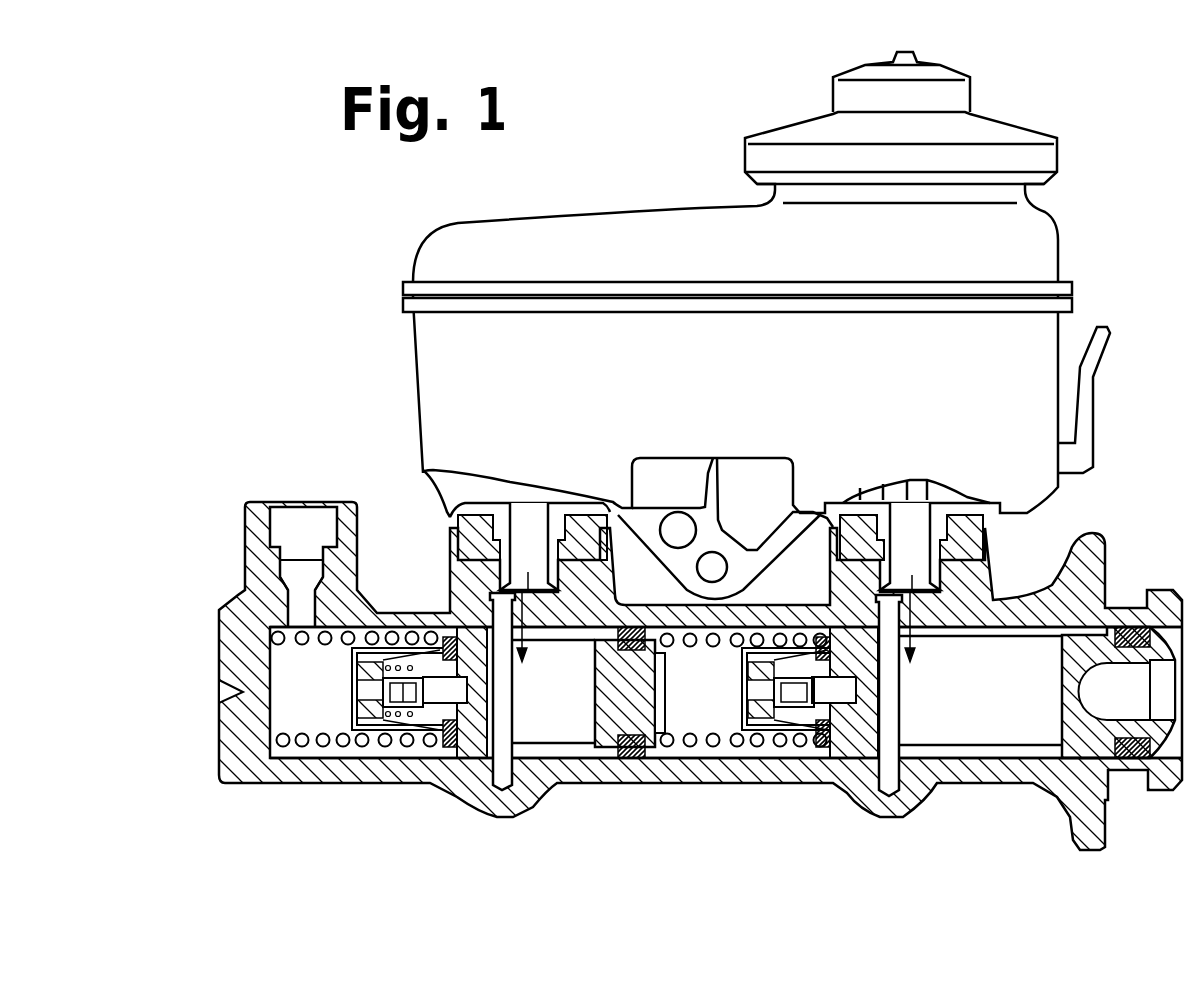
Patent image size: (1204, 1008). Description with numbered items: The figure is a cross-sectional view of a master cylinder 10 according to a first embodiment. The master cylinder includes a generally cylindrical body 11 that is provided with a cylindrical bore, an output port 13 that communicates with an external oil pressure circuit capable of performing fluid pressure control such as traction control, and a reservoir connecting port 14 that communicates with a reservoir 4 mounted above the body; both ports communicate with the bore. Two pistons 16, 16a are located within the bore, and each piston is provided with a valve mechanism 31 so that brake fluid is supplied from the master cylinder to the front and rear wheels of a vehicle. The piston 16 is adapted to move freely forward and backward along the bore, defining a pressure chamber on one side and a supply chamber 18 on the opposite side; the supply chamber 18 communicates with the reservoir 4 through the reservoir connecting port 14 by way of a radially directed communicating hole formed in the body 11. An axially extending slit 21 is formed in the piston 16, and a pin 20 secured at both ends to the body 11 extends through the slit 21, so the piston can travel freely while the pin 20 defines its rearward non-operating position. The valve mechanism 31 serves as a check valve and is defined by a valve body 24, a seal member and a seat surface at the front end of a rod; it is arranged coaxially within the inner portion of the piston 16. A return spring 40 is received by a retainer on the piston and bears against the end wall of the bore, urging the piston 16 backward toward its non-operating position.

The reservoir 4 is at (432, 363).
The master cylinder 10 is at (770, 792).
The body 11 is at (607, 768).
The output port 13 is at (300, 517).
The reservoir connecting port 14 is at (443, 590).
The piston 16 is at (487, 760).
The piston 16a is at (1108, 758).
The supply chamber 18 is at (545, 752).
The pin 20 is at (497, 792).
The slit 21 is at (580, 767).
The valve body 24 is at (397, 655).
The valve mechanism 31 is at (395, 757).
The return spring 40 is at (342, 747).